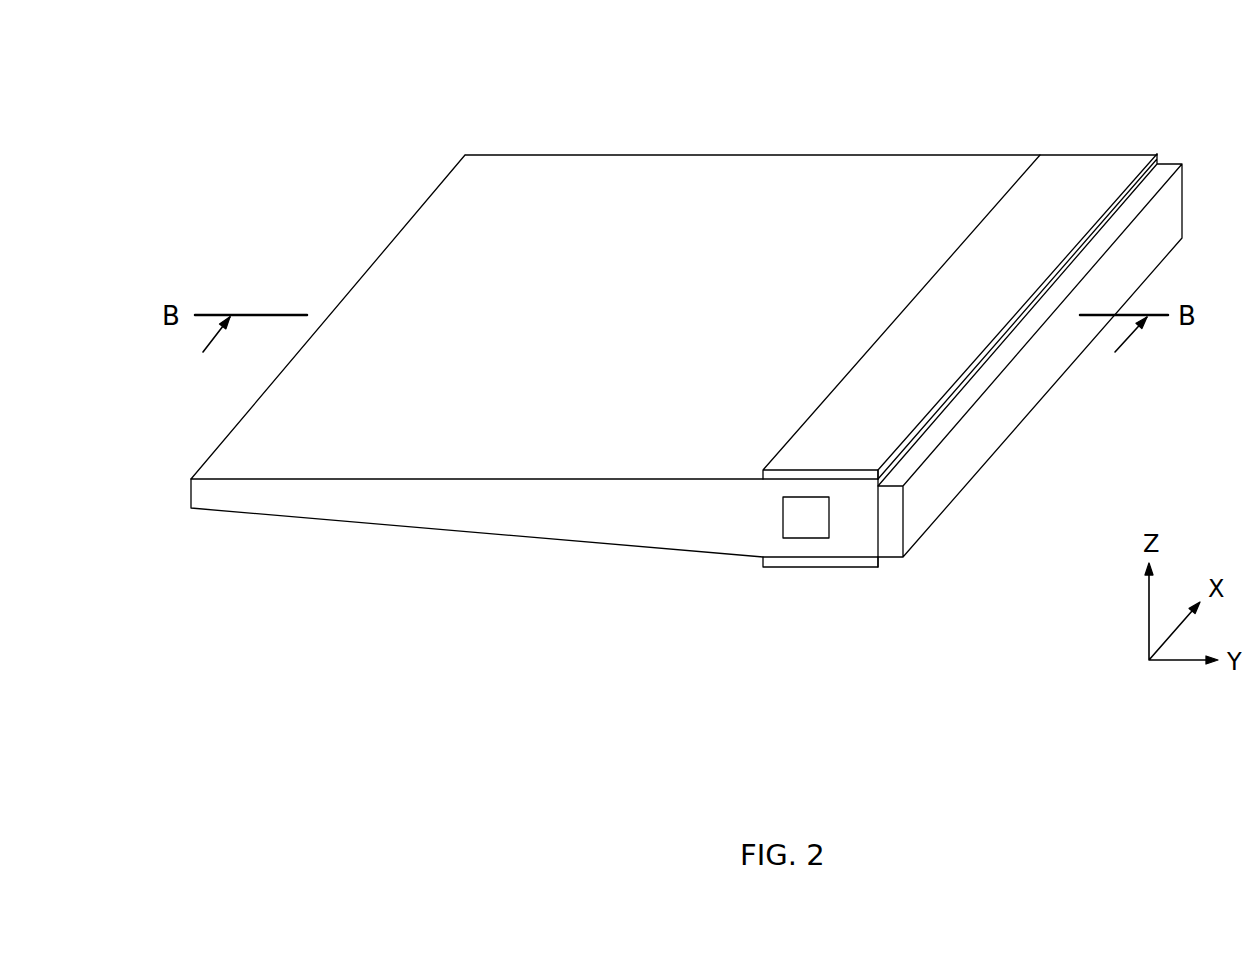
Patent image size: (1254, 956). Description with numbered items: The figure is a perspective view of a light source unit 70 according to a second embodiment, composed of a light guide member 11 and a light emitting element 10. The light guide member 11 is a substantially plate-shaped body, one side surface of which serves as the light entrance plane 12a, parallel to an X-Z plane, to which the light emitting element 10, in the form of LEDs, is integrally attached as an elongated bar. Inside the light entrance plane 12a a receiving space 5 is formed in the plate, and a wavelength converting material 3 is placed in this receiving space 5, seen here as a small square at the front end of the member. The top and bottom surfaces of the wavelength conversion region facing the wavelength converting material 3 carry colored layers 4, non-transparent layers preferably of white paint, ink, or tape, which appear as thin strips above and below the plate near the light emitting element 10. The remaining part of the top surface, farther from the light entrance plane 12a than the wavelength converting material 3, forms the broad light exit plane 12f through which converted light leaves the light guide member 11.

The light source unit 70 is at (902, 76).
The light guide member 11 is at (674, 343).
The light exit plane 12f is at (641, 193).
The light entrance plane 12a is at (880, 529).
The colored layer 4 is at (1094, 163).
The wavelength converting material 3 is at (816, 523).
The receiving space 5 is at (800, 514).
The light emitting element 10 is at (1003, 422).